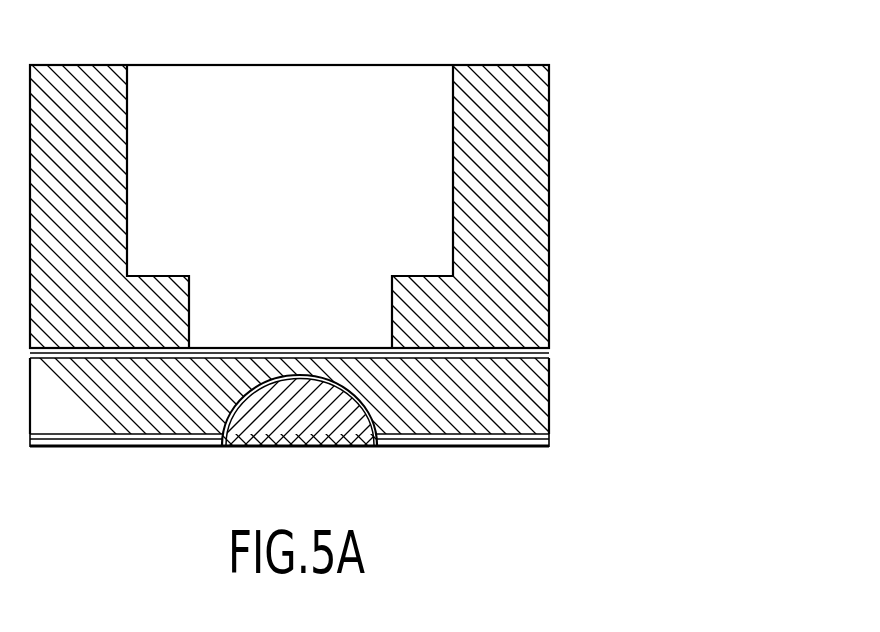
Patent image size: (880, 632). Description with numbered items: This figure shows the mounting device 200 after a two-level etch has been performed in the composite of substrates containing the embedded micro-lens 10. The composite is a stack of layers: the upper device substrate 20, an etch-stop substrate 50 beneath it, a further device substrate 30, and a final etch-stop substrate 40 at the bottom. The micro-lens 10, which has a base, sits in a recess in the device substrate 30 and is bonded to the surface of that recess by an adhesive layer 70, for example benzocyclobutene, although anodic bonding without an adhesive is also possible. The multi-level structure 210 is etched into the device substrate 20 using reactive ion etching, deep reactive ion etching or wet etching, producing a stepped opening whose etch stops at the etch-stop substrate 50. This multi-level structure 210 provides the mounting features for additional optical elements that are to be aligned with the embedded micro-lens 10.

The device substrate 20 is at (512, 63).
The multi-level structure 210 is at (395, 249).
The etch-stop substrate 50 is at (551, 357).
The device substrate 30 is at (539, 405).
The final etch-stop substrate 40 is at (98, 445).
The mounting device 200 is at (502, 462).
The adhesive layer 70 is at (352, 446).
The micro-lens 10 is at (281, 422).